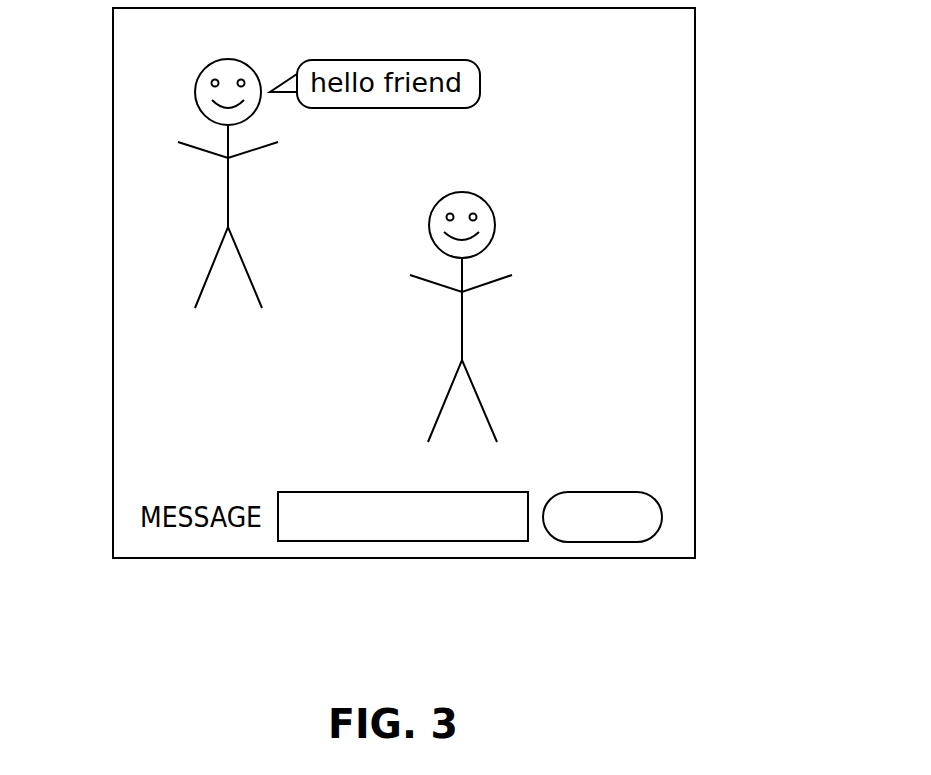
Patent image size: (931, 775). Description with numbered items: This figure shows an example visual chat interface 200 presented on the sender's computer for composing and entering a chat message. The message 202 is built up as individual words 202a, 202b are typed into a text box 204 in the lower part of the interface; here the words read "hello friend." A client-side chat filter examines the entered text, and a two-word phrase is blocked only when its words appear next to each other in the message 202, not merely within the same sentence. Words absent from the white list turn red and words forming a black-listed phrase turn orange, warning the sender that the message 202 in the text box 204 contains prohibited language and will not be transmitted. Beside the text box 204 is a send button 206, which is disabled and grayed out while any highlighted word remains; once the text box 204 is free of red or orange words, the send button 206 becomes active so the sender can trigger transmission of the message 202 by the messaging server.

The visual chat interface 200 is at (697, 261).
The chat message 202 is at (296, 508).
The individual word 202a is at (322, 540).
The individual word 202b is at (422, 540).
The text box 204 is at (505, 492).
The send button 206 is at (662, 515).